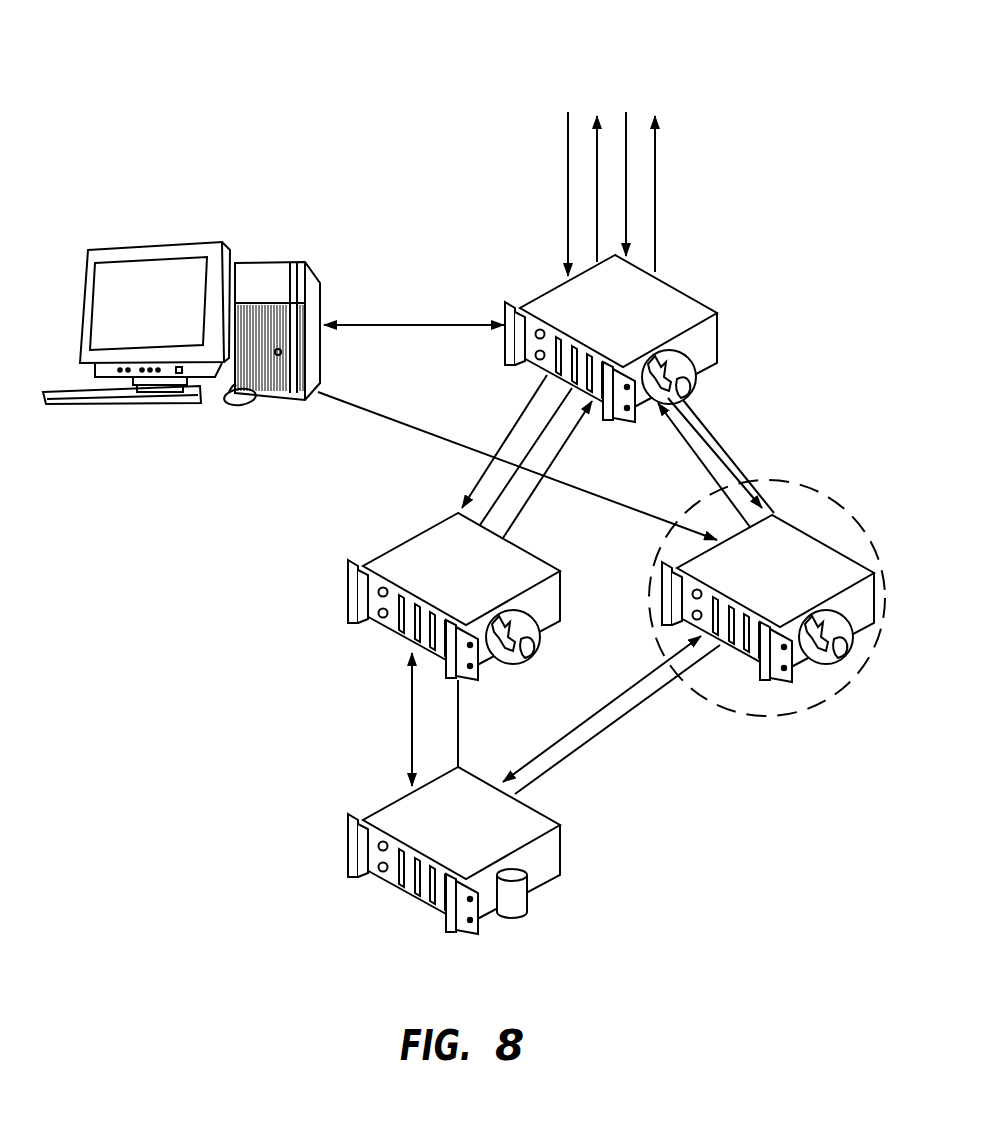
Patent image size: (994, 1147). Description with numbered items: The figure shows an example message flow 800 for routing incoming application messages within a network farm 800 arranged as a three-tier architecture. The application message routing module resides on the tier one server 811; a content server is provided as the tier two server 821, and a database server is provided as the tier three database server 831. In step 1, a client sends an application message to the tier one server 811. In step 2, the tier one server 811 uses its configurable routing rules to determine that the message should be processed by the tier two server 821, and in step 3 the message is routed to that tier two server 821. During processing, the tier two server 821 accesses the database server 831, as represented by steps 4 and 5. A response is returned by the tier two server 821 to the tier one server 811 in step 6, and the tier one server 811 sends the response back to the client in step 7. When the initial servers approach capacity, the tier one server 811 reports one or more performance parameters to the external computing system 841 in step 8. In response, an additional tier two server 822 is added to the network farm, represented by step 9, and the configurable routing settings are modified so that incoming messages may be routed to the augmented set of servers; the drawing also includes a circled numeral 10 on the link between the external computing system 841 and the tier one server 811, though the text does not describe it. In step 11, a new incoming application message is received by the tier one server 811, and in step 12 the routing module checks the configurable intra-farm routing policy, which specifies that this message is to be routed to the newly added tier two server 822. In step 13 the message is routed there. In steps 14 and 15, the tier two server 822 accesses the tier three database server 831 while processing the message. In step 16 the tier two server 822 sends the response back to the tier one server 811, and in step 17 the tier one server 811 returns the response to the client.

The message flow 800 is at (438, 39).
The external computing system 841 is at (155, 242).
The tier one server 811 is at (640, 331).
The tier two server 821 is at (484, 587).
The additional tier two server 822 is at (798, 589).
The tier three database server 831 is at (484, 841).
The step 1 is at (553, 183).
The step 2 is at (483, 347).
The step 3 is at (510, 450).
The step 4 is at (393, 719).
The step 5 is at (441, 723).
The step 6 is at (547, 474).
The step 7 is at (593, 172).
The step 8 is at (383, 343).
The step 9 is at (517, 466).
The step 10 message 10 is at (414, 308).
The step 11 is at (637, 169).
The step 12 is at (745, 332).
The step 13 is at (721, 455).
The step 14 is at (602, 709).
The step 15 is at (617, 719).
The step 16 is at (704, 465).
The step 17 is at (676, 194).